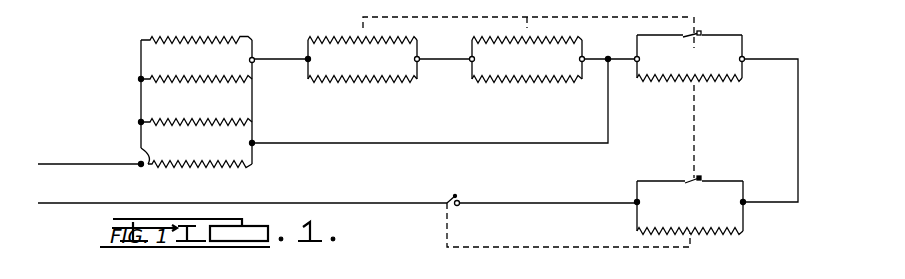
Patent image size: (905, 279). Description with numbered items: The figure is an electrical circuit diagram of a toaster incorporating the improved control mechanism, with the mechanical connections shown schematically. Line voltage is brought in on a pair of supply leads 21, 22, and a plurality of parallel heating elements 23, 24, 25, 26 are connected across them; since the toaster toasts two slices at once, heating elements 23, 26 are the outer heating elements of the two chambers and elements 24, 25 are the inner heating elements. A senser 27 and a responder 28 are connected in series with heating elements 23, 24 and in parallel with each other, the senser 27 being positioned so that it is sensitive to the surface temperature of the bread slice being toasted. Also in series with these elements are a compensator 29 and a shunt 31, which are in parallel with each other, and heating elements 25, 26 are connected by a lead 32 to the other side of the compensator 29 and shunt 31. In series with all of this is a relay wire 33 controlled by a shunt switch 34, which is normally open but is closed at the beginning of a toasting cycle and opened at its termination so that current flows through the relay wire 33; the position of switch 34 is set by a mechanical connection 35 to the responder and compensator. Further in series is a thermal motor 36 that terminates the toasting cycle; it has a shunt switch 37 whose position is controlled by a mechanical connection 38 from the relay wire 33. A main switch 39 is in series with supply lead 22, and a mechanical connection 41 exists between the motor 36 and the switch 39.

The supply lead 21 is at (50, 165).
The supply lead 22 is at (52, 205).
The outer sensor heating element 23 is at (141, 38).
The inner sensor heating element 24 is at (141, 79).
The inner heating element 25 is at (142, 121).
The outer heating element 26 is at (141, 150).
The senser 27 is at (318, 82).
The responder 28 is at (325, 38).
The compensator 29 is at (476, 40).
The shunt 31 is at (483, 80).
The lead 32 is at (467, 143).
The relay wire 33 is at (647, 80).
The shunt switch 34 is at (693, 38).
The mechanical connection 35 is at (545, 15).
The thermal motor 36 is at (733, 231).
The shunt switch 37 is at (700, 183).
The mechanical connection 38 is at (694, 125).
The main switch 39 is at (450, 196).
The mechanical connection 41 is at (516, 247).